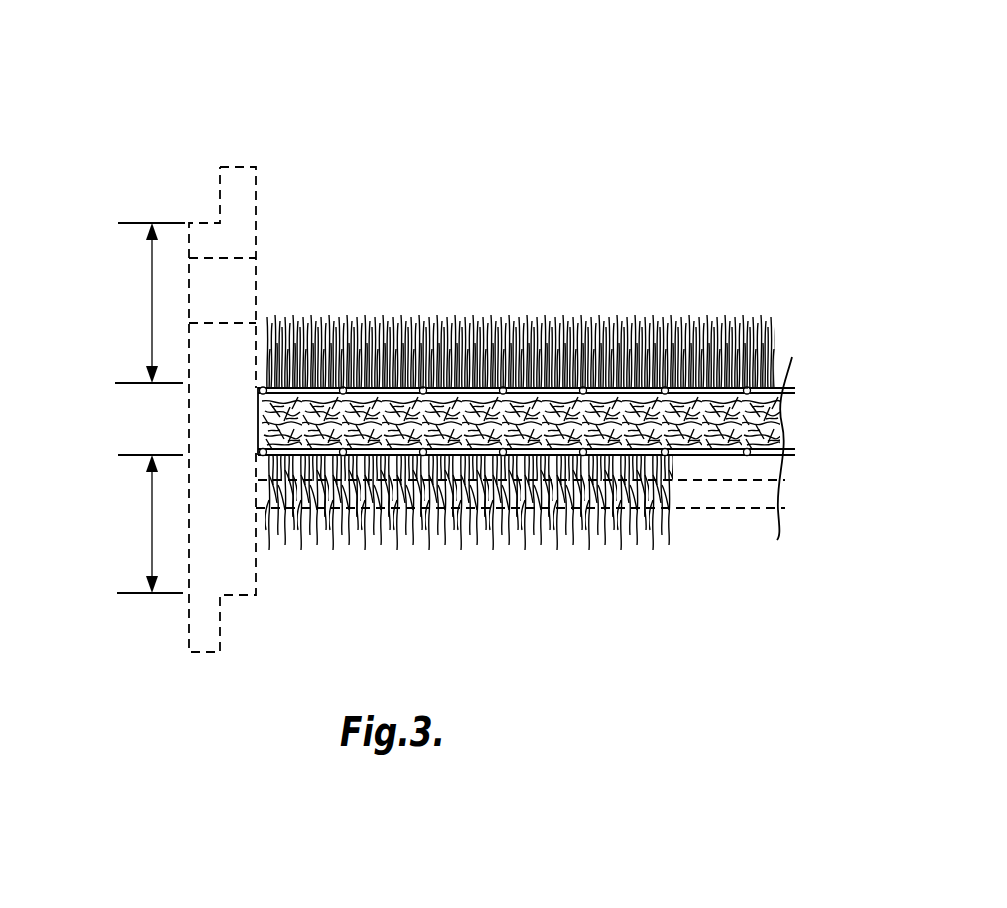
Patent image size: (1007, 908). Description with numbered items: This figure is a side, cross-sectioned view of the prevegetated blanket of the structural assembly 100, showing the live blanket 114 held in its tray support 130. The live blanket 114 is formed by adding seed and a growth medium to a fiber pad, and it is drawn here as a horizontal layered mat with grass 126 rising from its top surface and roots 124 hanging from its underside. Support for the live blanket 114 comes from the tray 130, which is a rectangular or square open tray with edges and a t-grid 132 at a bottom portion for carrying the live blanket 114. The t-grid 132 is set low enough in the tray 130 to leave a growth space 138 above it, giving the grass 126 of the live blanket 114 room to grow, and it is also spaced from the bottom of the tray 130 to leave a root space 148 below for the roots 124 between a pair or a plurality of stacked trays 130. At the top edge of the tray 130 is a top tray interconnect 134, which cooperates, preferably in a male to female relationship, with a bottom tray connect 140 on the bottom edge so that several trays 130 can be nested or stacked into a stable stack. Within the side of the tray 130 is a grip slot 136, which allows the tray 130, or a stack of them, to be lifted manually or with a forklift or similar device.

The structural assembly 100 is at (505, 112).
The live blanket 114 is at (781, 356).
The roots 124 is at (358, 553).
The grass 126 is at (513, 320).
The tray support 130 is at (170, 418).
The t-grid 132 is at (744, 490).
The top tray interconnect 134 is at (218, 196).
The grip slot 136 is at (228, 286).
The growth space 138 is at (152, 310).
The bottom tray connect 140 is at (220, 623).
The root space 148 is at (152, 518).